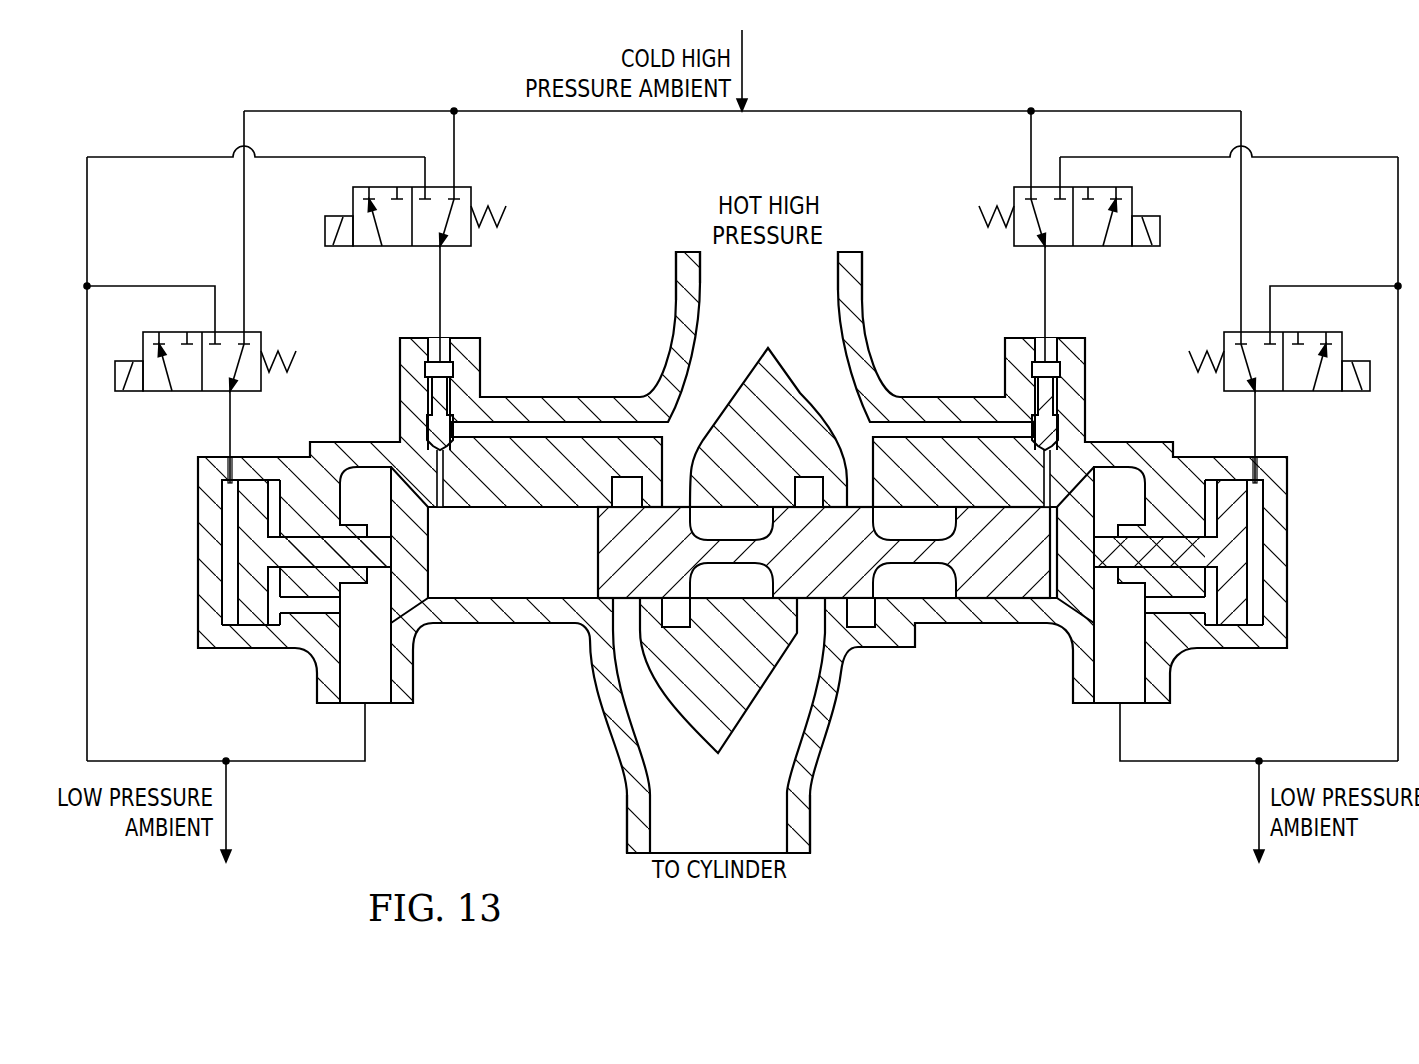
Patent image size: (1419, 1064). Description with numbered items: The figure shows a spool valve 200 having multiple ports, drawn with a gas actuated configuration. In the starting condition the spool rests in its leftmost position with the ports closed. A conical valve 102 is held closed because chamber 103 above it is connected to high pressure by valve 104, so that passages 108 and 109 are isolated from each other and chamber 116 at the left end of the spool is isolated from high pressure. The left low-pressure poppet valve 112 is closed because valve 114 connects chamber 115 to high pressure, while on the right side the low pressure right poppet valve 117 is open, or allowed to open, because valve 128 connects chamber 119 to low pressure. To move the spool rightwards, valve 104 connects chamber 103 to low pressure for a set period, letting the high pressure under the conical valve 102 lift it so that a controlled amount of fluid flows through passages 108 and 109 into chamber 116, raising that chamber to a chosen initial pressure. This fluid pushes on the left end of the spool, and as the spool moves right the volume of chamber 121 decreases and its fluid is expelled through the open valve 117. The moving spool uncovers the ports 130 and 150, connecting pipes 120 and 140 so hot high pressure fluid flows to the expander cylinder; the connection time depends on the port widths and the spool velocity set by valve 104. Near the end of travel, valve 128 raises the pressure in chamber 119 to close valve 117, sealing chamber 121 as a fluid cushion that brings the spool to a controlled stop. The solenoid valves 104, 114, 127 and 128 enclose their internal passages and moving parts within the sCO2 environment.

The conical valve 102 is at (450, 392).
The chamber 103 is at (425, 369).
The valve 104 is at (369, 247).
The passage 108 is at (597, 424).
The passage 109 is at (445, 470).
The low-pressure poppet valve 112 is at (243, 578).
The valve 114 is at (157, 391).
The chamber 115 is at (222, 507).
The chamber 116 is at (497, 605).
The low pressure right poppet valve 117 is at (1238, 587).
The chamber 119 is at (1256, 505).
The pipe 120 is at (660, 823).
The chamber 121 is at (1044, 592).
The solenoid valve 127 is at (1117, 247).
The valve 128 is at (1328, 391).
The port 130 is at (598, 628).
The pipe 140 is at (840, 350).
The port 150 is at (680, 620).
The spool valve 200 is at (598, 548).